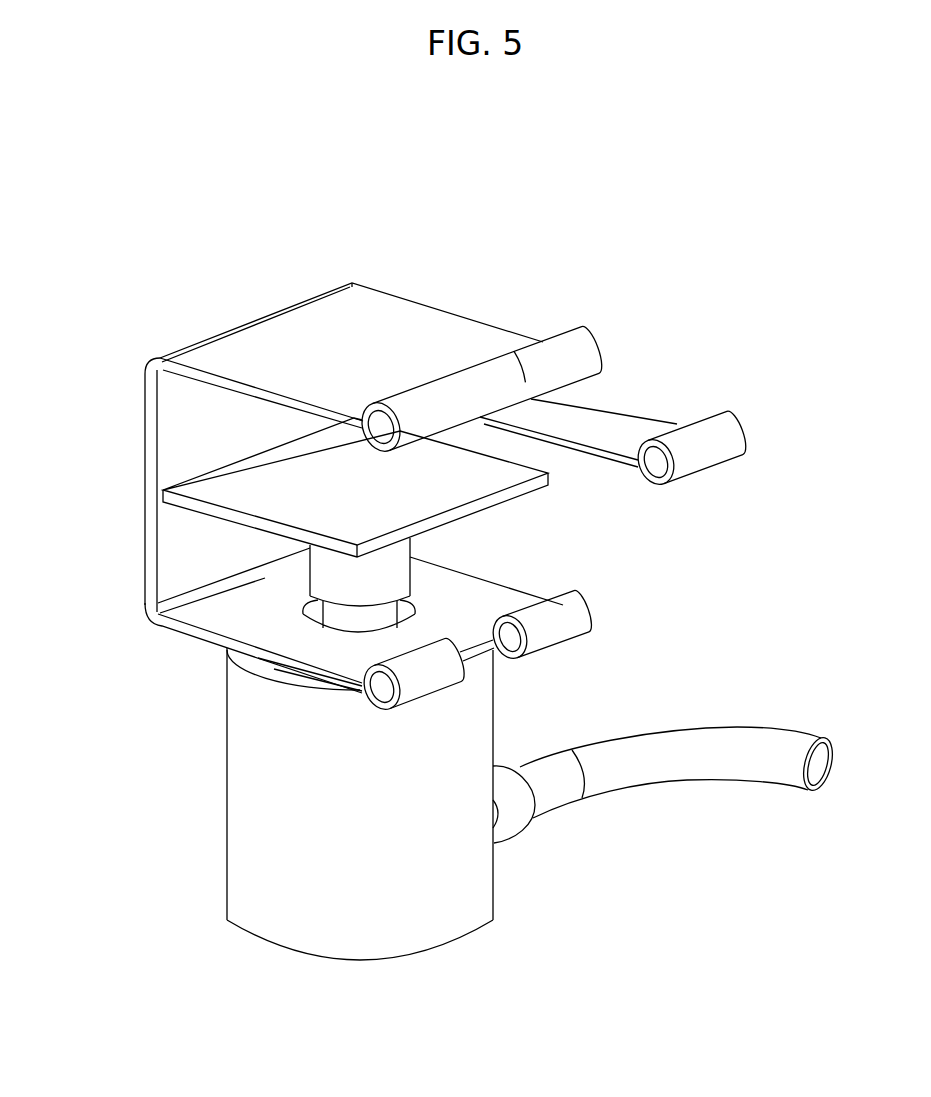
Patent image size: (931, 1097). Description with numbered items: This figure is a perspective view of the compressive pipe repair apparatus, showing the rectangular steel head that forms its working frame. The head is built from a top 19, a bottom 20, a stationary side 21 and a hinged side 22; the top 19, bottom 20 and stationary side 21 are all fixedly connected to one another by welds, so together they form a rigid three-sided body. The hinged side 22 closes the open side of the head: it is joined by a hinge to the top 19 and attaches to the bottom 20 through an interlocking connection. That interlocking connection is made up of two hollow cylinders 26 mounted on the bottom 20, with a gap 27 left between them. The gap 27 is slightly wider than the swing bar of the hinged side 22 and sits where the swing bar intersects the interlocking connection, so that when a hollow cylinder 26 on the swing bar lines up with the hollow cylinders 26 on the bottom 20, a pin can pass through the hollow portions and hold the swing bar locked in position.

The top 19 is at (450, 308).
The bottom 20 is at (185, 634).
The stationary side 21 is at (143, 497).
The hinged side 22 is at (748, 407).
The hollow cylinder 26 is at (593, 620).
The gap 27 is at (500, 671).